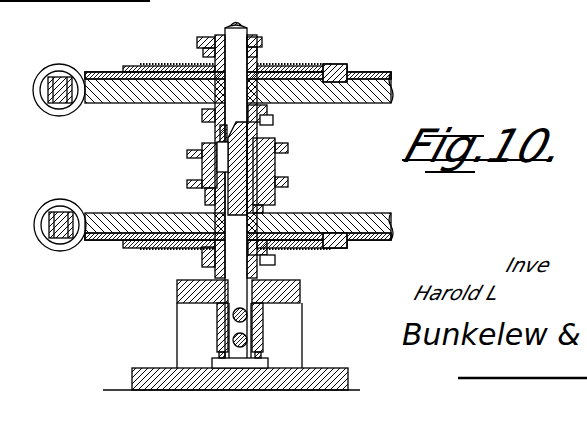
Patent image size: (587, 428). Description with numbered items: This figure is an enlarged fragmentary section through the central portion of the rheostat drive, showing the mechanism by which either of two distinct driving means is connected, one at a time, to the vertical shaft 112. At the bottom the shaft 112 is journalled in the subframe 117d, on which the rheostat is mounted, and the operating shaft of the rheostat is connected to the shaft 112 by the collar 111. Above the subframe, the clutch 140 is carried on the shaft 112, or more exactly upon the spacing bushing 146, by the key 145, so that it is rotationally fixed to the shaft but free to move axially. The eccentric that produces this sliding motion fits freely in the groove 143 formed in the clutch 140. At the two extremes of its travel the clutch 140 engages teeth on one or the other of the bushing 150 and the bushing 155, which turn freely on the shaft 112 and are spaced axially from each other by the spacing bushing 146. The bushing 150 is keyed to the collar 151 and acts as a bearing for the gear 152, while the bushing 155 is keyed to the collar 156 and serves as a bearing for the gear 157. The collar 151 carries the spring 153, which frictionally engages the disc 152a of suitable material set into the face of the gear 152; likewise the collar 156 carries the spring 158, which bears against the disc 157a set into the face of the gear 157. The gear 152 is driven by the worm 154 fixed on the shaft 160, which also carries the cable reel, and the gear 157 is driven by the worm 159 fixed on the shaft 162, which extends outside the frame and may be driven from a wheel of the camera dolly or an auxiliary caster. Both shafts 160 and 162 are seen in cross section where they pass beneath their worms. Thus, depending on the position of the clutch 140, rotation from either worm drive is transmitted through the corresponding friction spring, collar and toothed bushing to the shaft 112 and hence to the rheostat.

The collar 111 is at (270, 323).
The vertical shaft 112 is at (240, 30).
The subframe 117d is at (158, 381).
The clutch 140 is at (278, 145).
The groove 143 is at (282, 160).
The key 145 is at (220, 142).
The spacing bushing 146 is at (218, 128).
The bushing 150 is at (280, 191).
The collar 151 is at (200, 262).
The gear 152 is at (335, 211).
The disc 152a is at (348, 245).
The spring 153 is at (343, 247).
The worm 154 is at (67, 208).
The bushing 155 is at (274, 115).
The collar 156 is at (201, 54).
The gear 157 is at (360, 97).
The disc 157a is at (332, 70).
The spring 158 is at (298, 64).
The worm 159 is at (71, 72).
The shaft 160 is at (48, 237).
The shaft 162 is at (50, 110).